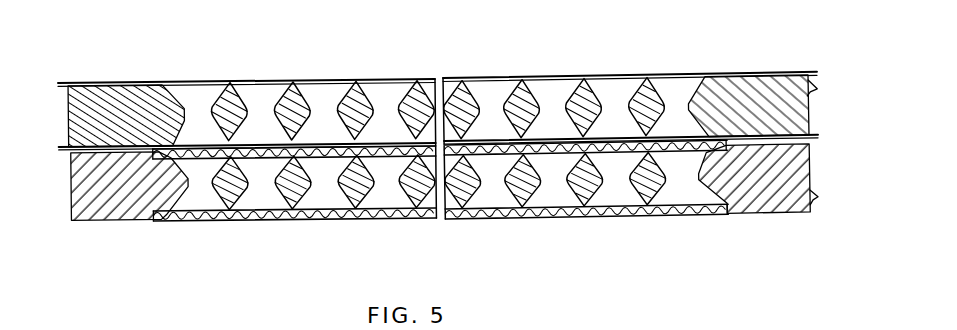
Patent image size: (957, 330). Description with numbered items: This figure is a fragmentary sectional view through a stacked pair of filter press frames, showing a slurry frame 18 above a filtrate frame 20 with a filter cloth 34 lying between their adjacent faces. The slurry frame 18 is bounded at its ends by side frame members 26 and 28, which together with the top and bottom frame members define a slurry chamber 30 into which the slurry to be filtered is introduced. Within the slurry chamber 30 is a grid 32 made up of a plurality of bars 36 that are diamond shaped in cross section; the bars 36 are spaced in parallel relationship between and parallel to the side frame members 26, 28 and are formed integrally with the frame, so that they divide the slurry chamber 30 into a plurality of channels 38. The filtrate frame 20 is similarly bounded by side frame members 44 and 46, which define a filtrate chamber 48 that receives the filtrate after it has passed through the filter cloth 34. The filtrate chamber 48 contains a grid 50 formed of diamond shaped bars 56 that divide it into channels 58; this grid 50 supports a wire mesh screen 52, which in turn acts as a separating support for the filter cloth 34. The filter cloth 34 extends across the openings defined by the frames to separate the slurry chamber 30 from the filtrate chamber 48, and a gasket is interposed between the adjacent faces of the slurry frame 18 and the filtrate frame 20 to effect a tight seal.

The slurry frame 18 is at (817, 79).
The filtrate frame 20 is at (809, 207).
The side frame member 26 is at (730, 92).
The side frame member 28 is at (127, 89).
The slurry chamber 30 is at (678, 94).
The grid 32 is at (595, 88).
The filter cloth 34 is at (479, 141).
The bar 36 is at (347, 94).
The channel 38 is at (257, 103).
The side frame member 44 is at (750, 205).
The side frame member 46 is at (111, 210).
The filtrate chamber 48 is at (670, 196).
The grid 50 is at (214, 194).
The wire mesh screen 52 is at (552, 156).
The diamond shaped bar 56 is at (337, 199).
The channel 58 is at (256, 190).